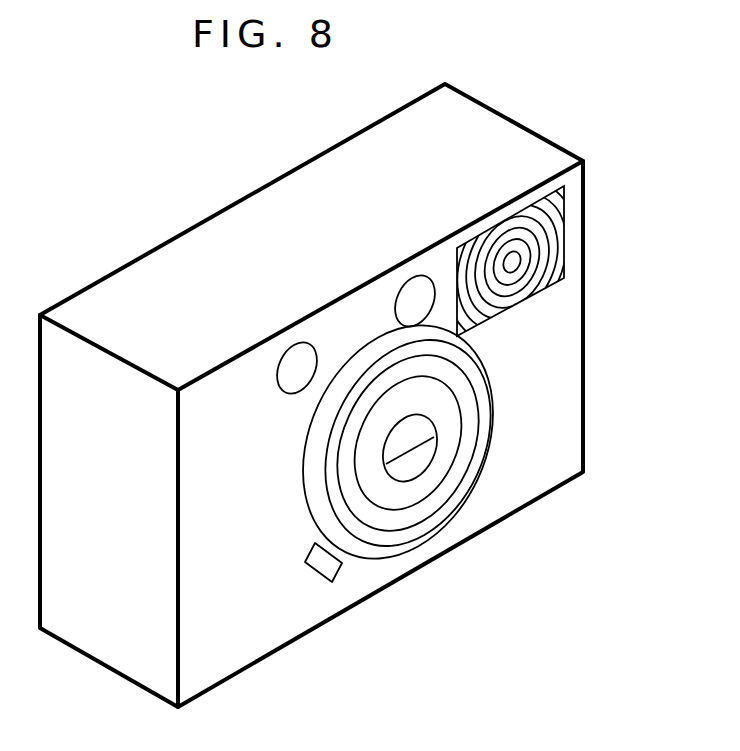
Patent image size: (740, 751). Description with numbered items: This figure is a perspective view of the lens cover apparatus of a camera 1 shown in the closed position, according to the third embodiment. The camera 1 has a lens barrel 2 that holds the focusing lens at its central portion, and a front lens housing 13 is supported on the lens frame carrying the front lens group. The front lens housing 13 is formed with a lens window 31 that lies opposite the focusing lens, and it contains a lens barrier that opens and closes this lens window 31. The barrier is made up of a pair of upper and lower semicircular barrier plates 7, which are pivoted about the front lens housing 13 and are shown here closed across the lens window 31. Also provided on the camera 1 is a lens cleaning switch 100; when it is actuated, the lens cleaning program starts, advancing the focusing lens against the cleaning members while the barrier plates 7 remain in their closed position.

The camera 1 is at (572, 392).
The lens barrel 2 is at (313, 492).
The front lens housing 13 is at (463, 450).
The lens window 31 is at (408, 483).
The barrier plates 7 is at (417, 427).
The lens cleaning switch 100 is at (323, 572).